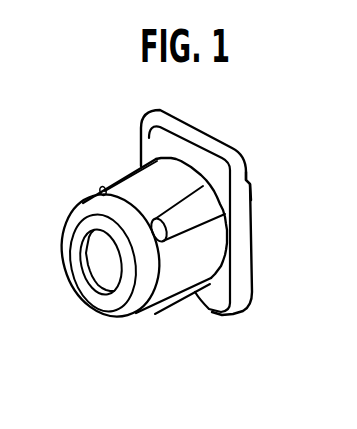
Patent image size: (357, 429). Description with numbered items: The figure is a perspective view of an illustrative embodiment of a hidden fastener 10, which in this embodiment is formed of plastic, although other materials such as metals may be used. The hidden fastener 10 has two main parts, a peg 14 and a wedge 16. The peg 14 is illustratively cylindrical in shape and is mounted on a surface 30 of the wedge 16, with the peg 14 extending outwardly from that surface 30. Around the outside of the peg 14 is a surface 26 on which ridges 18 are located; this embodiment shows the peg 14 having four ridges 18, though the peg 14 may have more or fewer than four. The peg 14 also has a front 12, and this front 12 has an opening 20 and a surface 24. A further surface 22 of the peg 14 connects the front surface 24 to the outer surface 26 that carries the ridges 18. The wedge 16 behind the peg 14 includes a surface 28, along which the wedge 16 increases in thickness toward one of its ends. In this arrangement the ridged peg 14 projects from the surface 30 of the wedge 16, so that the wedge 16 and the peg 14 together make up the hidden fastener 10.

The hidden fastener 10 is at (227, 117).
The front 12 is at (68, 292).
The peg 14 is at (163, 320).
The wedge 16 is at (260, 210).
The ridges 18 is at (137, 194).
The opening 20 is at (104, 272).
The surface 22 is at (143, 297).
The surface 24 is at (68, 247).
The surface 26 is at (103, 187).
The surface 28 is at (246, 202).
The surface 30 is at (149, 136).